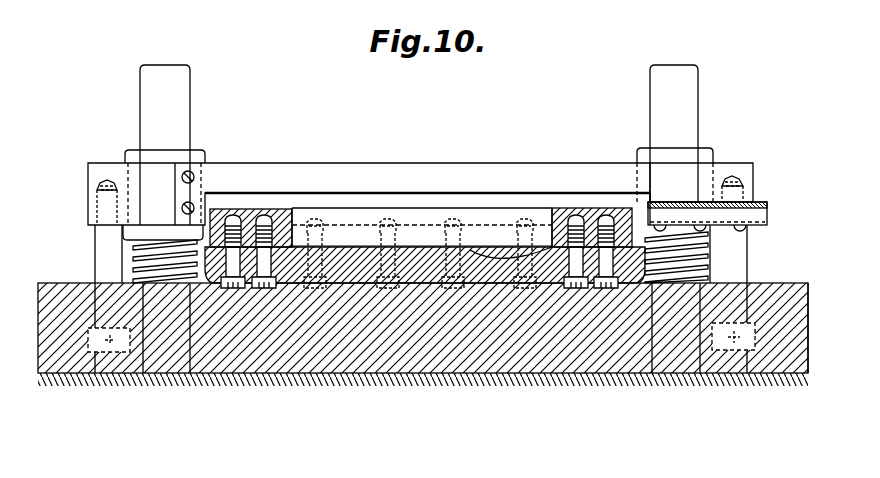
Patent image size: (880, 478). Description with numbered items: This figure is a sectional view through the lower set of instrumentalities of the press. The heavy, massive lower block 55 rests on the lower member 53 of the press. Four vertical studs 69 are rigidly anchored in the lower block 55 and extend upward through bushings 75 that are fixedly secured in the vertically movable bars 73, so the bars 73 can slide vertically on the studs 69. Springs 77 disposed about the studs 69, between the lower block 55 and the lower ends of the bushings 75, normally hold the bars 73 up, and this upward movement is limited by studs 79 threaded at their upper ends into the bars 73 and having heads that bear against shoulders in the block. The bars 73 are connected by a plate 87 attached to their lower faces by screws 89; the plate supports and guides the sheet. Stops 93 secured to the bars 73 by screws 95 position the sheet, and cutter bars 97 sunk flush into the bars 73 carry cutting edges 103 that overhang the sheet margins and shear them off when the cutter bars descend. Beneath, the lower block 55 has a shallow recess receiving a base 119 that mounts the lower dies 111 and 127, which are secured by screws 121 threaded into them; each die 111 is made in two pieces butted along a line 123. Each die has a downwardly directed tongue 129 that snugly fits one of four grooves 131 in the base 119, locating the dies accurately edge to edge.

The lower member of the press 53 is at (565, 377).
The lower block 55 is at (789, 283).
The vertical studs 69 is at (150, 101).
The vertically movable bars 73 is at (88, 177).
The bushings 75 is at (133, 153).
The springs 77 is at (168, 262).
The studs 79 is at (98, 258).
The plate 87 is at (758, 203).
The screws 89 is at (706, 231).
The stops 93 is at (195, 190).
The screws 95 is at (191, 175).
The cutter bars 97 is at (450, 166).
The cutting edges 103 is at (460, 194).
The dies 111 is at (360, 210).
The base 119 is at (345, 275).
The screws 121 is at (243, 284).
The line 123 is at (412, 216).
The dies 127 is at (252, 212).
The tongue 129 is at (292, 247).
The grooves 131 is at (494, 254).